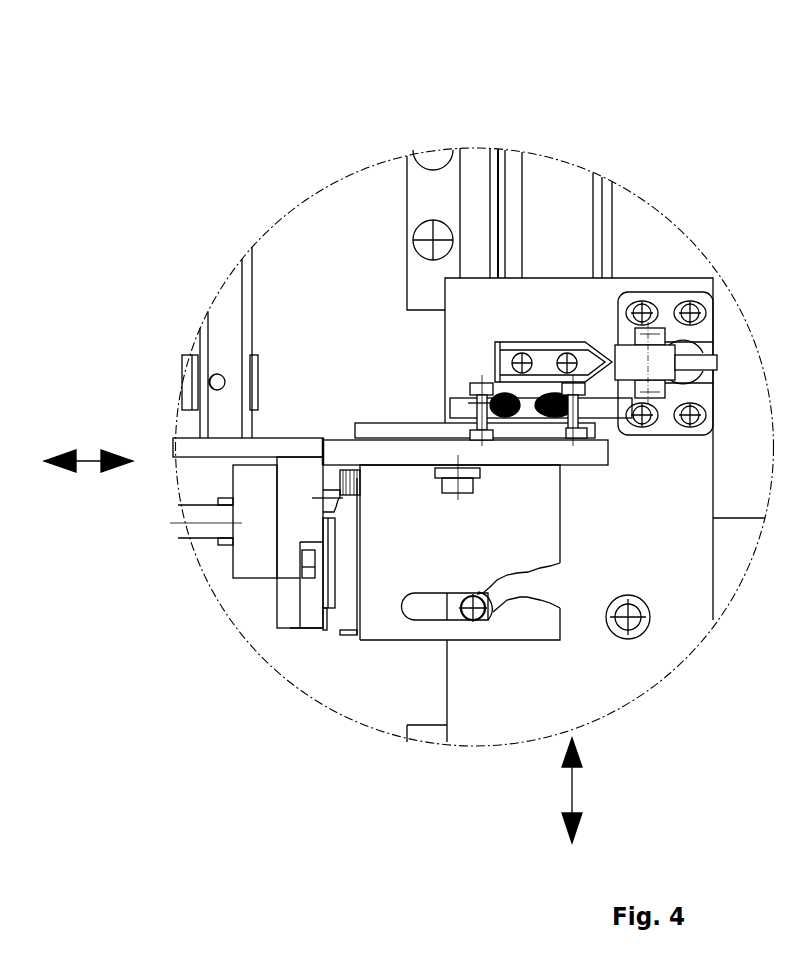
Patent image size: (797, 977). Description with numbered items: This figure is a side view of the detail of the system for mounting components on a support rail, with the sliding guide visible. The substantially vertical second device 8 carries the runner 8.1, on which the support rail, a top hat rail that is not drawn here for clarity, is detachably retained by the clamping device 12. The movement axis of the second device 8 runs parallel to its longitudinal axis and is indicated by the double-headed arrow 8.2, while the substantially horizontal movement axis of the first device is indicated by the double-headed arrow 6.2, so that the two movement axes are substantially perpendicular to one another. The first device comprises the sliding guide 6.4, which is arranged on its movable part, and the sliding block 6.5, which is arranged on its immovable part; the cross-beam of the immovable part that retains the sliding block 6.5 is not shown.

The double-headed arrow 6.2 is at (92, 458).
The sliding guide 6.4 is at (523, 537).
The sliding block 6.5 is at (487, 615).
The second device 8 is at (535, 235).
The runner 8.1 is at (560, 303).
The double-headed arrow 8.2 is at (572, 785).
The clamping device 12 is at (652, 357).